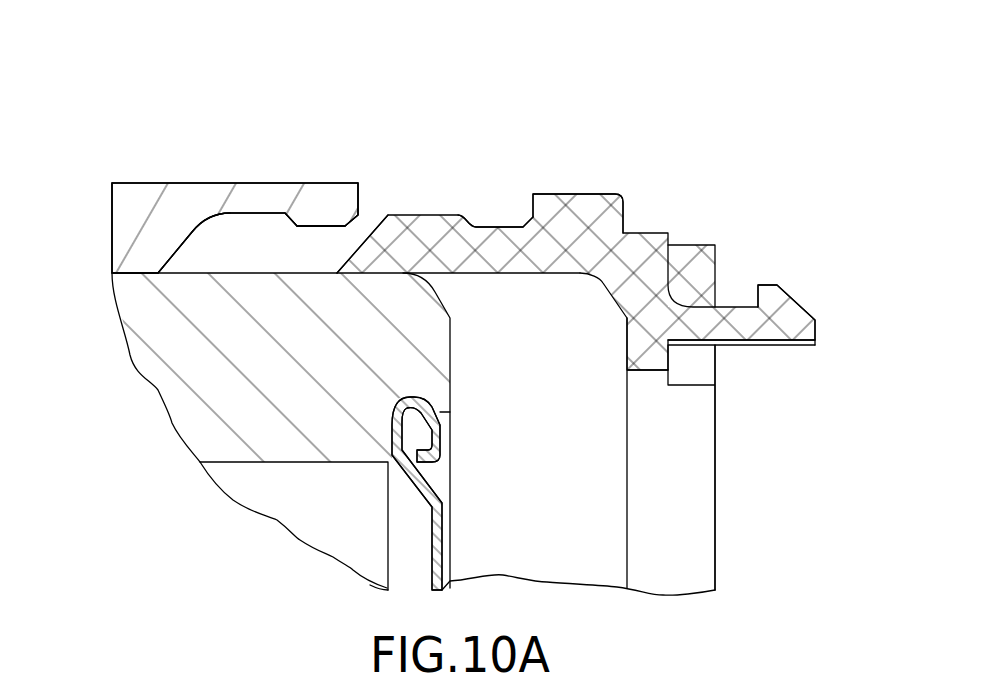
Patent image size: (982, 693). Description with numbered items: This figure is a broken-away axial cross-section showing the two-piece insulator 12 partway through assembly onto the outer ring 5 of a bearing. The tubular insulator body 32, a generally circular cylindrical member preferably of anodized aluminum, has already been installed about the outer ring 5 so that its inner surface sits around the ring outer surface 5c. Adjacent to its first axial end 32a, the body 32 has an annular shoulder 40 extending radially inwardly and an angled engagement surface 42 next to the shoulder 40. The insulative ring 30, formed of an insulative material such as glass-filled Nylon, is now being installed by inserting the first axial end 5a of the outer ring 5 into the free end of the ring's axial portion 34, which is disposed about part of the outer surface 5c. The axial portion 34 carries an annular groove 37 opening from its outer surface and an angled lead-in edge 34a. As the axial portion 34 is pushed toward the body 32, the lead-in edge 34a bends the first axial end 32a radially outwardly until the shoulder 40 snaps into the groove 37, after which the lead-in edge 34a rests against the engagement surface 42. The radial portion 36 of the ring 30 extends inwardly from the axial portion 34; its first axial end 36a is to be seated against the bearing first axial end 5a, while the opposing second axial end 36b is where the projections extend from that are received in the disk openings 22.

The outer ring 5 is at (150, 355).
The first axial end 5a is at (450, 370).
The outer surface 5c is at (142, 275).
The insulator 12 is at (304, 124).
The openings 22 is at (818, 294).
The insulative ring 30 is at (556, 143).
The tubular insulator body 32 is at (209, 150).
The first axial end 32a is at (360, 188).
The axial portion 34 is at (605, 180).
The angled lead-in edge 34a is at (372, 230).
The radial portion 36 is at (736, 417).
The first axial end 36a is at (627, 366).
The second axial end 36b is at (717, 478).
The annular groove 37 is at (490, 226).
The annular shoulder 40 is at (320, 219).
The angled engagement surface 42 is at (188, 242).